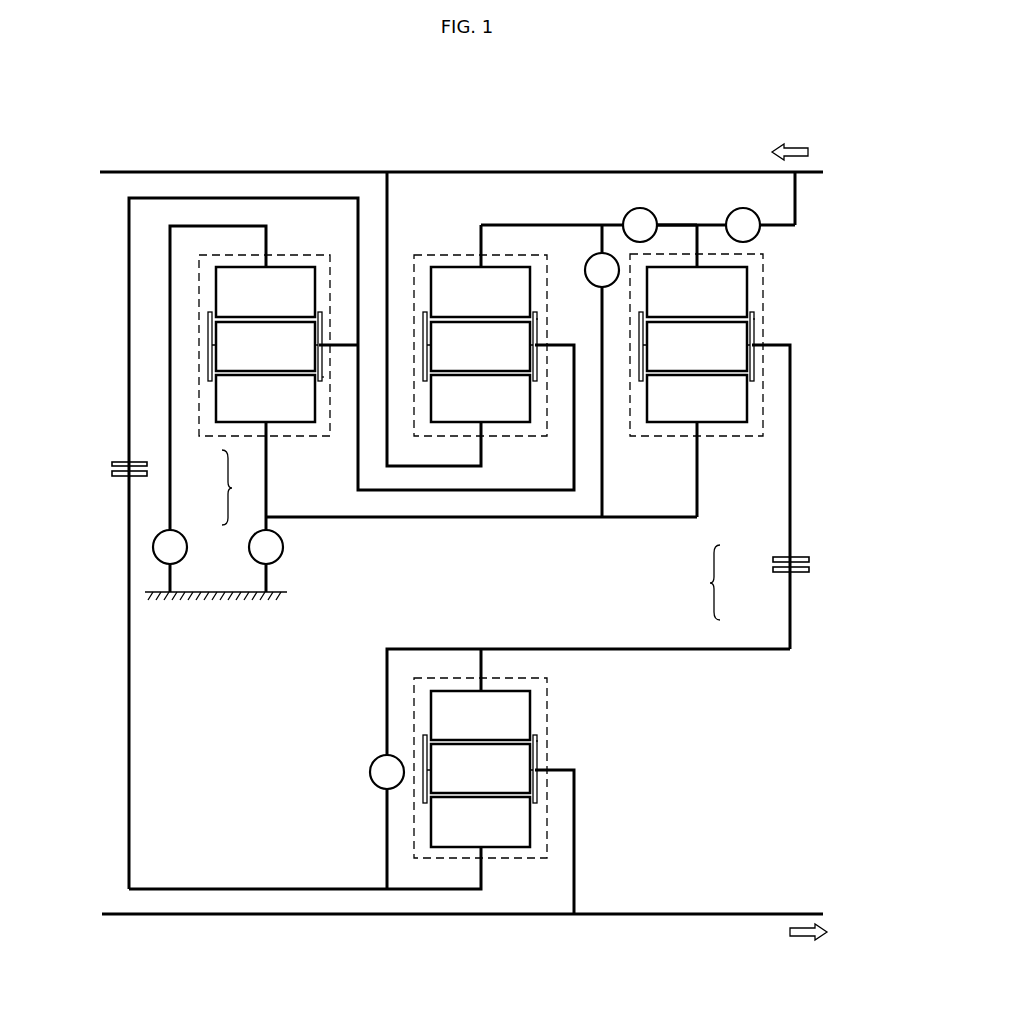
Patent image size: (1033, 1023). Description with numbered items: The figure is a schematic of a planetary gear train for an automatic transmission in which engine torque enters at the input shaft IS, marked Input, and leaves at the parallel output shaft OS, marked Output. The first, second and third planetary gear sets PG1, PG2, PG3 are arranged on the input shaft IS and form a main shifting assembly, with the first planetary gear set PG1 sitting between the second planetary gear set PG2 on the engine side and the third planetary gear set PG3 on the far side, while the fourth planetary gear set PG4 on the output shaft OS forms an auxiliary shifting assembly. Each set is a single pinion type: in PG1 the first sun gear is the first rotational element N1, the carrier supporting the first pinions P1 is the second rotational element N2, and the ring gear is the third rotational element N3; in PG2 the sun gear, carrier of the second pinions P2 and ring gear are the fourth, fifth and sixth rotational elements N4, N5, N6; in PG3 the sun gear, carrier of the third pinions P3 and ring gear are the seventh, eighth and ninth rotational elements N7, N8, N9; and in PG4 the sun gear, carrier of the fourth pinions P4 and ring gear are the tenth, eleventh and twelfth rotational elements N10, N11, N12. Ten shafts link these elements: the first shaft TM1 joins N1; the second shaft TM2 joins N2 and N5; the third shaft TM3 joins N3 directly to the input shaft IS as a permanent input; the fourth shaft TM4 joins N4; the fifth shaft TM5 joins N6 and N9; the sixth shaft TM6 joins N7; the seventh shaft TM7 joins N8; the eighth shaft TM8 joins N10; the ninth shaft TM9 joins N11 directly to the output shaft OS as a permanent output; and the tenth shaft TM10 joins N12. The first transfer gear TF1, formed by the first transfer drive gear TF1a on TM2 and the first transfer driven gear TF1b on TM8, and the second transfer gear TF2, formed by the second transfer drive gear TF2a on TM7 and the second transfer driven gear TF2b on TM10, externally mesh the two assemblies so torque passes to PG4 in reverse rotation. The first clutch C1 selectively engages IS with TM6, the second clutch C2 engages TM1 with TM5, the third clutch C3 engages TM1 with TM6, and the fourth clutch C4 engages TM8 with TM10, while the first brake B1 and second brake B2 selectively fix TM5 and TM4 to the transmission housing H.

The input shaft IS is at (750, 172).
The output shaft OS is at (738, 914).
The input direction Input is at (796, 141).
The output direction Output is at (794, 948).
The first planetary gear set PG1 is at (438, 256).
The second planetary gear set PG2 is at (300, 256).
The third planetary gear set PG3 is at (691, 255).
The fourth planetary gear set PG4 is at (509, 861).
The first rotational element N1 is at (480, 292).
The second rotational element N2 is at (540, 317).
The third rotational element N3 is at (480, 398).
The fourth rotational element N4 is at (265, 292).
The fifth rotational element N5 is at (322, 369).
The sixth rotational element N6 is at (265, 452).
The seventh rotational element N7 is at (697, 292).
The eighth rotational element N8 is at (756, 317).
The ninth rotational element N9 is at (697, 398).
The tenth rotational element N10 is at (480, 822).
The eleventh rotational element N11 is at (541, 740).
The twelfth rotational element N12 is at (480, 715).
The first pinions P1 is at (480, 346).
The second pinions P2 is at (265, 346).
The third pinions P3 is at (696, 346).
The fourth pinions P4 is at (480, 769).
The first shaft TM1 is at (551, 225).
The second shaft TM2 is at (505, 492).
The third shaft TM3 is at (408, 468).
The fourth shaft TM4 is at (170, 253).
The fifth shaft TM5 is at (587, 518).
The sixth shaft TM6 is at (668, 225).
The seventh shaft TM7 is at (790, 489).
The eighth shaft TM8 is at (247, 889).
The ninth shaft TM9 is at (574, 838).
The tenth shaft TM10 is at (547, 649).
The first clutch C1 is at (743, 225).
The second clutch C2 is at (602, 270).
The third clutch C3 is at (640, 225).
The fourth clutch C4 is at (387, 772).
The first brake B1 is at (266, 561).
The second brake B2 is at (170, 561).
The first transfer gear TF1 is at (242, 487).
The first transfer drive gear TF1a is at (147, 464).
The first transfer driven gear TF1b is at (147, 473).
The second transfer gear TF2 is at (699, 582).
The second transfer drive gear TF2a is at (773, 560).
The second transfer driven gear TF2b is at (773, 570).
The transmission housing H is at (287, 593).